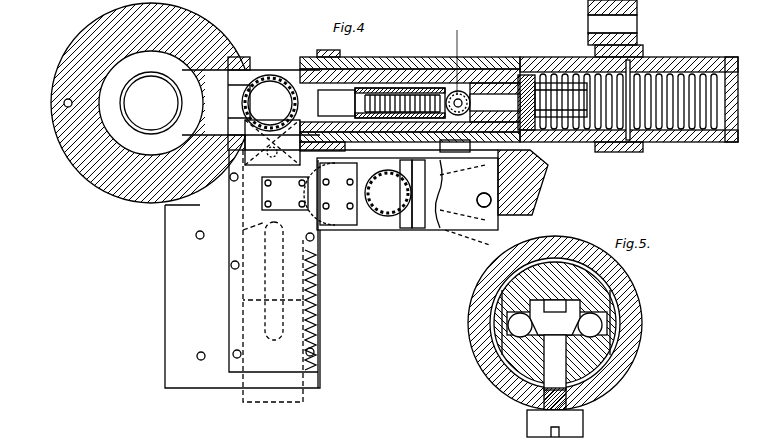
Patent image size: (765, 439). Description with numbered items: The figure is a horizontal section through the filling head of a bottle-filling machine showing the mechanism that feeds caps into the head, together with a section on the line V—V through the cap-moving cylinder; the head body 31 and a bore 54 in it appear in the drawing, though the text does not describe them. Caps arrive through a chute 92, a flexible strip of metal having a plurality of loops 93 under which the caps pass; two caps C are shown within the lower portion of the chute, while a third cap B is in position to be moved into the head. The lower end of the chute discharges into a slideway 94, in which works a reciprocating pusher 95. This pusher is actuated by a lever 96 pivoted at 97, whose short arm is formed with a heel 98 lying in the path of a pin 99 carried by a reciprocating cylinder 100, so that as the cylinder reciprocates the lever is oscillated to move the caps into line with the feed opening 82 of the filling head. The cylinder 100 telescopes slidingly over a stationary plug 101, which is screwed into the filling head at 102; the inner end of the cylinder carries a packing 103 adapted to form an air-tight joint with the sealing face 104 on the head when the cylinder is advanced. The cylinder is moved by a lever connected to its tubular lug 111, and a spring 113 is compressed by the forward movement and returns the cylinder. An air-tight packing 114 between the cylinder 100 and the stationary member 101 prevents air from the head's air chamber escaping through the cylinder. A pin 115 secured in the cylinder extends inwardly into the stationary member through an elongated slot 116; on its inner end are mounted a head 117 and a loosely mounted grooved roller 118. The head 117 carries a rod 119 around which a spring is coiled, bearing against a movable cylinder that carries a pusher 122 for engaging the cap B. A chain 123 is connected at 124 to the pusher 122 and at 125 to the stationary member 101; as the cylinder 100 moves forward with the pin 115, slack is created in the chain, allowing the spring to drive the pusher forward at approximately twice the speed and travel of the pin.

In FIG. 4, the magazine drum 31 is at (124, 192).
In FIG. 4, the pivot hole 54 is at (63, 103).
In FIG. 4, the feed opening 82 is at (251, 96).
In FIG. 4, the cap B is at (270, 103).
In FIG. 4, the screw connection 102 is at (240, 57).
In FIG. 4, the packing 103 is at (312, 64).
In FIG. 4, the sealing face 104 is at (254, 68).
In FIG. 4, the pusher 122 is at (336, 103).
In FIG. 4, the chain connection 125 is at (378, 88).
In FIG. 4, the chain 123 is at (395, 92).
In FIG. 4, the stationary plug 101 is at (410, 90).
In FIG. 5, the stationary plug 101 is at (510, 383).
In FIG. 4, the pin 115 is at (448, 92).
In FIG. 5, the pin 115 is at (590, 395).
In FIG. 4, the section line V is at (458, 93).
In FIG. 4, the air-tight packing 114 is at (515, 73).
In FIG. 4, the reciprocating cylinder 100 is at (565, 146).
In FIG. 5, the reciprocating cylinder 100 is at (490, 350).
In FIG. 4, the spring 113 is at (662, 75).
In FIG. 4, the tubular lug 111 is at (637, 28).
In FIG. 4, the chain connection 124 is at (382, 140).
In FIG. 4, the rod 119 is at (410, 140).
In FIG. 4, the pin 99 is at (455, 142).
In FIG. 4, the caps C is at (400, 230).
In FIG. 4, the loops 93 is at (418, 228).
In FIG. 4, the chute 92 is at (448, 225).
In FIG. 4, the pivot 97 is at (486, 208).
In FIG. 4, the heel 98 is at (520, 162).
In FIG. 4, the slideway 94 is at (240, 193).
In FIG. 4, the reciprocating pusher 95 is at (242, 212).
In FIG. 4, the lever 96 is at (352, 262).
In FIG. 5, the grooved roller 118 is at (612, 325).
In FIG. 5, the head 117 is at (575, 305).
In FIG. 5, the elongated slot 116 is at (600, 372).